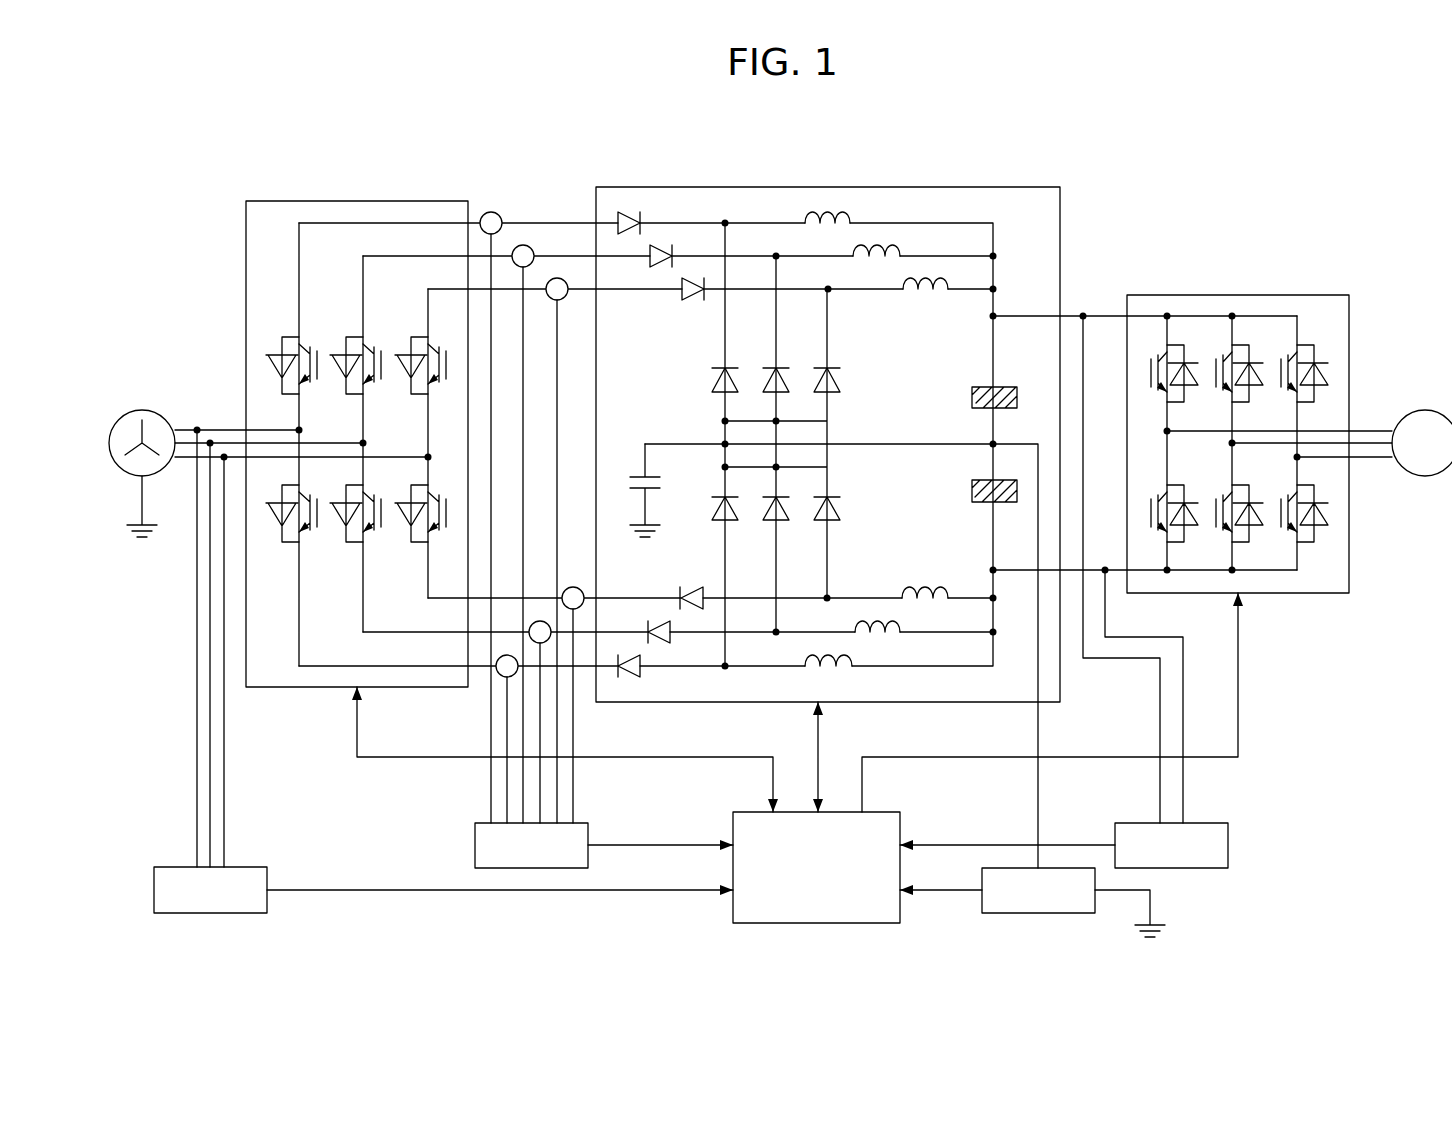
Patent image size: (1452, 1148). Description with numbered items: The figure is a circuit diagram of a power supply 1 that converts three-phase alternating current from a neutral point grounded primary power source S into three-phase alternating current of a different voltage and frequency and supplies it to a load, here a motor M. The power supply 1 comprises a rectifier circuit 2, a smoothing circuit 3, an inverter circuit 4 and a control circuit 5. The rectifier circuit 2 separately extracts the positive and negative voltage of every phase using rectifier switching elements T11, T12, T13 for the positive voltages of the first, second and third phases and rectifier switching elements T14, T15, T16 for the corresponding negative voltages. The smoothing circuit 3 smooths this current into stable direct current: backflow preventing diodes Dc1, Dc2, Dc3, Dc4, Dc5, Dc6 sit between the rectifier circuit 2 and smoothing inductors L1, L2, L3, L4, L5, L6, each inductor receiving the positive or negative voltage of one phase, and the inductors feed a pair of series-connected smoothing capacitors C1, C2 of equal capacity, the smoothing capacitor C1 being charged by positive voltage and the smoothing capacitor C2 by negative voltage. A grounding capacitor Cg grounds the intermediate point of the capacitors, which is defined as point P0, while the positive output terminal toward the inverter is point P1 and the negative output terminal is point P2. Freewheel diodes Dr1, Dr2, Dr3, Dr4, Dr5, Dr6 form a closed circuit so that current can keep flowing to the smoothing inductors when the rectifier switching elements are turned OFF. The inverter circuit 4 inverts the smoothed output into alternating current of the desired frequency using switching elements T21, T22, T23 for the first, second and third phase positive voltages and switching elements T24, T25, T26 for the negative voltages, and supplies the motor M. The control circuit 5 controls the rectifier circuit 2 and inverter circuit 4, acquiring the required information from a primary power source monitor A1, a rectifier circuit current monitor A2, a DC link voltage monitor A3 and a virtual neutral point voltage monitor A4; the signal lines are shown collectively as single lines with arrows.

The power supply 1 is at (1193, 176).
The rectifier circuit 2 is at (441, 203).
The smoothing circuit 3 is at (997, 189).
The inverter circuit 4 is at (1320, 296).
The control circuit 5 is at (902, 915).
The primary power source S is at (142, 410).
The motor M is at (1428, 410).
The rectifier switching element T11 is at (284, 338).
The rectifier switching element T12 is at (348, 338).
The rectifier switching element T13 is at (413, 338).
The rectifier switching element T14 is at (290, 543).
The rectifier switching element T15 is at (354, 543).
The rectifier switching element T16 is at (419, 543).
The inverter switching element T21 is at (1190, 402).
The inverter switching element T22 is at (1255, 402).
The inverter switching element T23 is at (1320, 402).
The inverter switching element T24 is at (1190, 542).
The inverter switching element T25 is at (1255, 542).
The inverter switching element T26 is at (1320, 542).
The backflow preventing diode Dc1 is at (640, 223).
The backflow preventing diode Dc2 is at (662, 245).
The backflow preventing diode Dc3 is at (682, 296).
The backflow preventing diode Dc4 is at (640, 676).
The backflow preventing diode Dc5 is at (660, 640).
The backflow preventing diode Dc6 is at (680, 590).
The freewheel diode Dr1 is at (738, 376).
The freewheel diode Dr2 is at (790, 376).
The freewheel diode Dr3 is at (841, 376).
The freewheel diode Dr4 is at (738, 510).
The freewheel diode Dr5 is at (790, 510).
The freewheel diode Dr6 is at (841, 510).
The smoothing inductor L1 is at (812, 232).
The smoothing inductor L2 is at (862, 264).
The smoothing inductor L3 is at (912, 297).
The smoothing inductor L4 is at (805, 660).
The smoothing inductor L5 is at (855, 625).
The smoothing inductor L6 is at (902, 590).
The smoothing capacitor C1 is at (972, 387).
The smoothing capacitor C2 is at (972, 502).
The grounding capacitor Cg is at (636, 472).
The intermediate point P0 is at (990, 444).
The positive output terminal P1 is at (990, 316).
The negative output terminal P2 is at (990, 570).
The primary power source monitor A1 is at (254, 865).
The rectifier circuit current monitor A2 is at (475, 845).
The DC link voltage monitor A3 is at (1228, 838).
The virtual neutral point voltage monitor A4 is at (1040, 913).